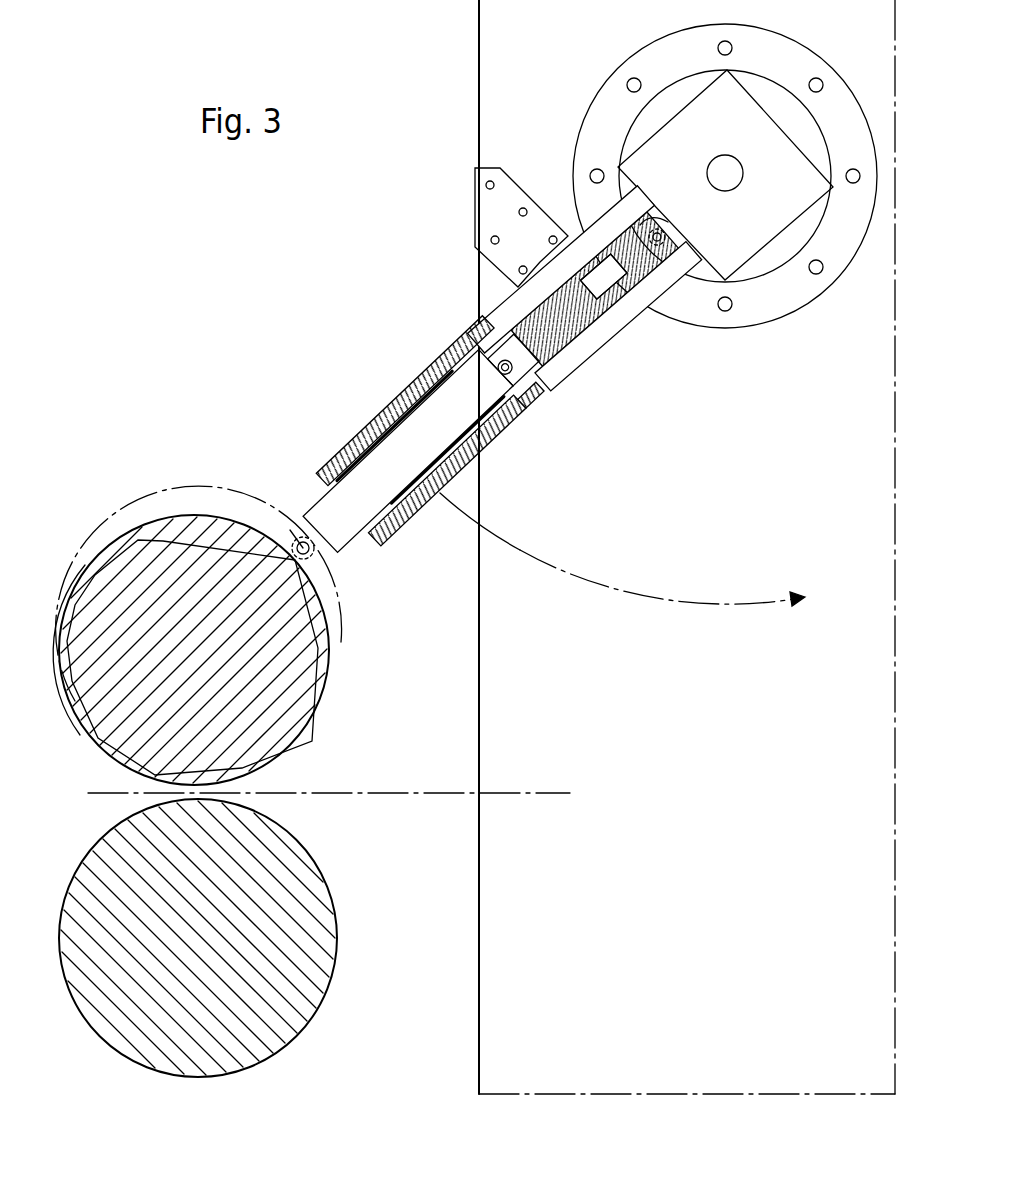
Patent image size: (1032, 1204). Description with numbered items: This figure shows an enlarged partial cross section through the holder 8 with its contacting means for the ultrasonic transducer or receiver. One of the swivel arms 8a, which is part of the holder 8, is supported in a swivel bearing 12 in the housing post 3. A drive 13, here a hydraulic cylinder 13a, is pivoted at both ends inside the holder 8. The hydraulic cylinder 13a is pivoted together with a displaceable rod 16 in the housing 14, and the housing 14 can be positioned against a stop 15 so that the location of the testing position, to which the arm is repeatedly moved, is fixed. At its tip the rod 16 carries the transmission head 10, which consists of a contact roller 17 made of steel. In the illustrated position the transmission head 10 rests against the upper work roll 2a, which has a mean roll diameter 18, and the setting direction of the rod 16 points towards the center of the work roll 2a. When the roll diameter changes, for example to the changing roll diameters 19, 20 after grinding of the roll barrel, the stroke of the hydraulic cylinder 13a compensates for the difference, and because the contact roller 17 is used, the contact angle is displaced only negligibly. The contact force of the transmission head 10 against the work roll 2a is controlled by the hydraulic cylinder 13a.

The upper work roll 2a is at (330, 640).
The housing post 3 is at (517, 75).
The holder 8 is at (663, 153).
The swivel arm 8a is at (400, 416).
The transmission head 10 is at (285, 533).
The swivel bearing 12 is at (653, 60).
The drive 13 is at (533, 307).
The hydraulic cylinder 13a is at (567, 240).
The housing 14 is at (380, 413).
The stop 15 is at (483, 228).
The displaceable rod 16 is at (403, 462).
The contact roller 17 is at (305, 562).
The mean roll diameter 18 is at (103, 547).
The changing roll diameter 19 is at (165, 538).
The changing roll diameter 20 is at (190, 487).